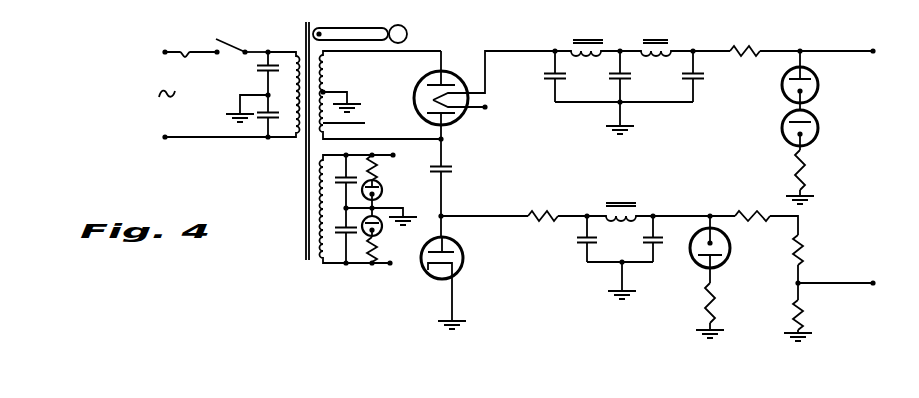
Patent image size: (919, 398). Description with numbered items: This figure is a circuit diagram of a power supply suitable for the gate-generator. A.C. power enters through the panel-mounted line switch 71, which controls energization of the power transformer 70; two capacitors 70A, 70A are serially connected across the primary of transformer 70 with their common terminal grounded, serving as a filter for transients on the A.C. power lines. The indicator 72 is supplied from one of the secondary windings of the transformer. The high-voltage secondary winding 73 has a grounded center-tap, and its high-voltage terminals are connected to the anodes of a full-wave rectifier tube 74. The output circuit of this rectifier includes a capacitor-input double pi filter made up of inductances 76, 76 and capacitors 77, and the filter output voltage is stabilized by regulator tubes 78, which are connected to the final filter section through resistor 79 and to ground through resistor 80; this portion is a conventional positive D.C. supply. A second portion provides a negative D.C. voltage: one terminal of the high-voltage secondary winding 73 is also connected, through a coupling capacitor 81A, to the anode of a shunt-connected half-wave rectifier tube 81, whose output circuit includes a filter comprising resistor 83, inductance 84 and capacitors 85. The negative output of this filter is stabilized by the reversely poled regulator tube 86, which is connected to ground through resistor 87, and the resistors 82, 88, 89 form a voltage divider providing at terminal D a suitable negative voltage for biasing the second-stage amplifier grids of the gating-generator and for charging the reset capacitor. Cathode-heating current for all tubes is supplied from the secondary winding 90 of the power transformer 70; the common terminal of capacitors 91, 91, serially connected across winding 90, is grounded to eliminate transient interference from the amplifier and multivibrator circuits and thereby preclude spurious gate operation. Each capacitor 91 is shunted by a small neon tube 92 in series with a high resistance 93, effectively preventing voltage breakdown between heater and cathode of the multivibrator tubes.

The power transformer 70 is at (263, 193).
The capacitors 70A is at (258, 69).
The line switch 71 is at (228, 38).
The indicator 72 is at (407, 32).
The high-voltage secondary winding 73 is at (356, 123).
The full-wave rectifier tube 74 is at (415, 89).
The inductances 76 is at (658, 37).
The capacitors 77 is at (560, 80).
The regulator tubes 78 is at (820, 96).
The resistor 79 is at (752, 47).
The resistor 80 is at (812, 190).
The half-wave rectifier tube 81 is at (463, 267).
The coupling capacitor 81A is at (455, 170).
The resistor 82 is at (748, 212).
The resistor 83 is at (543, 208).
The inductance 84 is at (638, 210).
The capacitors 85 is at (643, 241).
The regulator tube 86 is at (731, 247).
The resistor 87 is at (716, 298).
The resistor 88 is at (808, 258).
The resistor 89 is at (812, 307).
The secondary winding 90 is at (316, 223).
The capacitors 91 is at (338, 182).
The neon tube 92 is at (383, 193).
The high resistance 93 is at (378, 166).